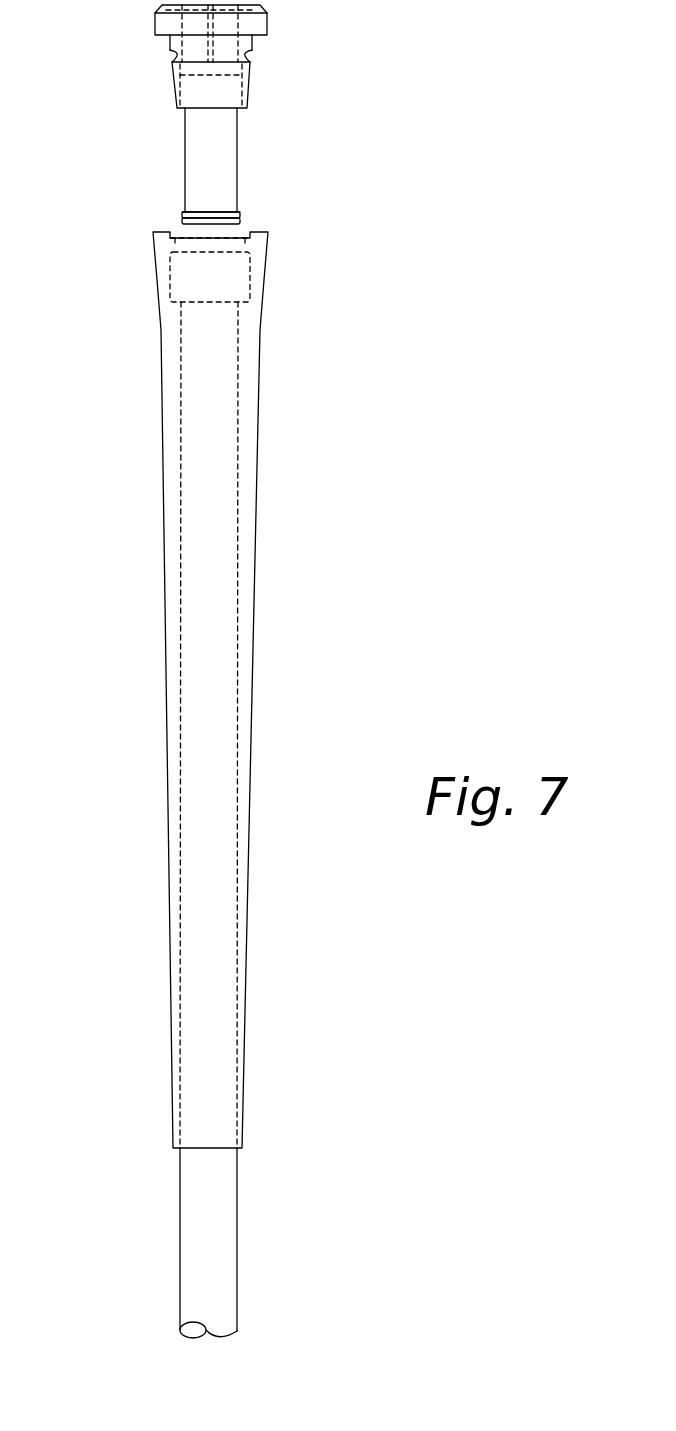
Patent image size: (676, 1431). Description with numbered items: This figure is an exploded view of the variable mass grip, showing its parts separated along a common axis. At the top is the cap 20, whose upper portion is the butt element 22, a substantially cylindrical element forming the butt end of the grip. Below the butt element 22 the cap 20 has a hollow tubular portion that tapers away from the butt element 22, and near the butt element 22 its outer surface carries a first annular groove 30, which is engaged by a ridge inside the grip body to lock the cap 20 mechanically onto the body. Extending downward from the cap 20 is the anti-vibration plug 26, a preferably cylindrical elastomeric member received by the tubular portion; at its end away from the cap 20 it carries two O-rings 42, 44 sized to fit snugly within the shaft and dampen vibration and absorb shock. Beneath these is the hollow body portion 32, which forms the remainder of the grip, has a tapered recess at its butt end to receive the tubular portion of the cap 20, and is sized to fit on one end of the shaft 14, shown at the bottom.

The shaft 14 is at (197, 1228).
The cap 20 is at (303, 84).
The butt element 22 is at (168, 23).
The anti-vibration plug 26 is at (224, 164).
The first annular groove 30 is at (175, 54).
The hollow body portion 32 is at (168, 771).
The O-ring 42 is at (182, 214).
The O-ring 44 is at (182, 221).